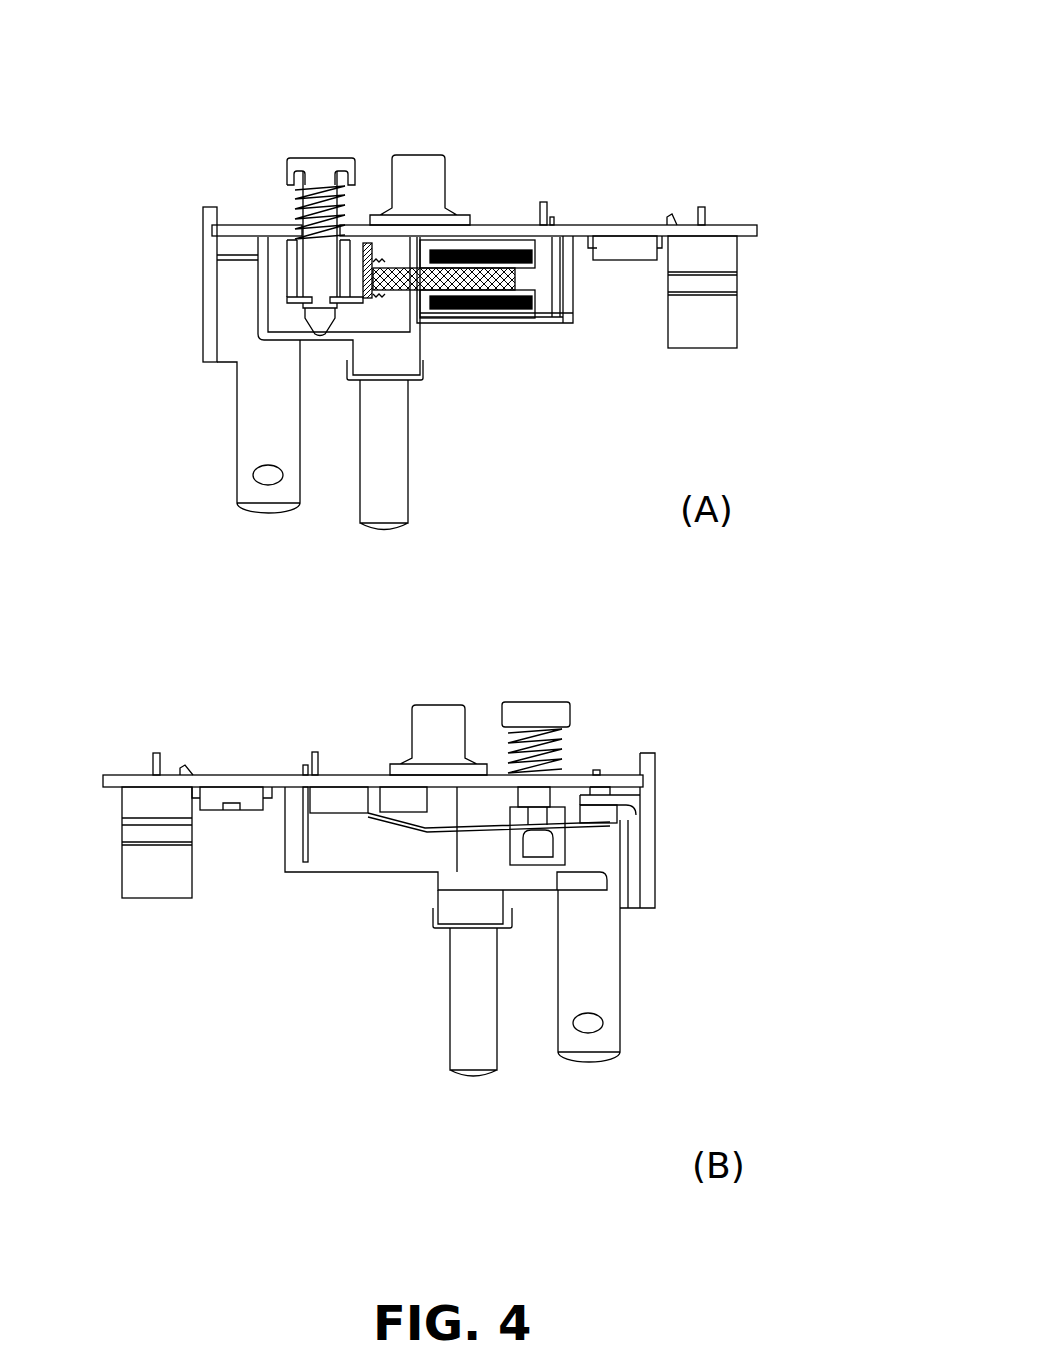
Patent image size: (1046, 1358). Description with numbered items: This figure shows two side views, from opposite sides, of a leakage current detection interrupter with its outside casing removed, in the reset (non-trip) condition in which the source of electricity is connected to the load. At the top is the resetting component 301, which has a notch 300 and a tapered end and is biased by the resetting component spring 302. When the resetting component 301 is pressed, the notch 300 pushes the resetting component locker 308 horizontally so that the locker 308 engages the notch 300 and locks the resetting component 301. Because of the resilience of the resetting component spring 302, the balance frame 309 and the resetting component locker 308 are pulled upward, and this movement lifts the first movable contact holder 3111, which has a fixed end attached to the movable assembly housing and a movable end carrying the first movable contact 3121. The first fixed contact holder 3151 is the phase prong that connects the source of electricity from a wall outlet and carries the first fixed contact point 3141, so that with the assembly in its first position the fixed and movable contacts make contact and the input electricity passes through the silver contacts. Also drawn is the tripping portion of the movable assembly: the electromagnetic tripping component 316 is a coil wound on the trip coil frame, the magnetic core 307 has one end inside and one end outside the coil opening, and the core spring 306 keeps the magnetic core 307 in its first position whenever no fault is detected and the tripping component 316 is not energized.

The notch 300 is at (310, 303).
The resetting component 301 is at (318, 165).
The resetting component spring 302 is at (297, 203).
The core spring 306 is at (390, 266).
The magnetic core 307 is at (472, 268).
The resetting component locker 308 is at (365, 303).
The balance frame 309 is at (540, 846).
The electromagnetic tripping component 316 is at (502, 308).
The first movable contact holder 3111 is at (442, 832).
The first movable contact 3121 is at (605, 818).
The first fixed contact point 3141 is at (613, 808).
The first fixed contact holder 3151 is at (597, 942).